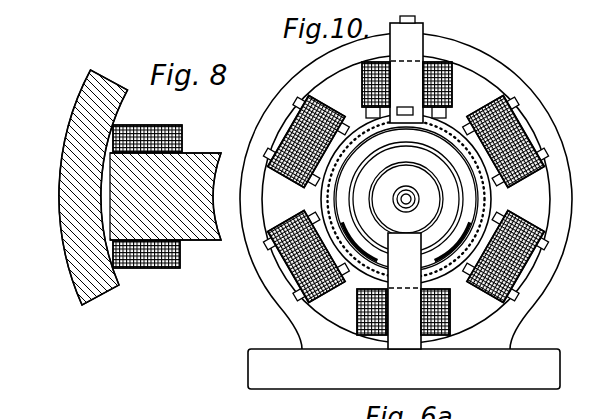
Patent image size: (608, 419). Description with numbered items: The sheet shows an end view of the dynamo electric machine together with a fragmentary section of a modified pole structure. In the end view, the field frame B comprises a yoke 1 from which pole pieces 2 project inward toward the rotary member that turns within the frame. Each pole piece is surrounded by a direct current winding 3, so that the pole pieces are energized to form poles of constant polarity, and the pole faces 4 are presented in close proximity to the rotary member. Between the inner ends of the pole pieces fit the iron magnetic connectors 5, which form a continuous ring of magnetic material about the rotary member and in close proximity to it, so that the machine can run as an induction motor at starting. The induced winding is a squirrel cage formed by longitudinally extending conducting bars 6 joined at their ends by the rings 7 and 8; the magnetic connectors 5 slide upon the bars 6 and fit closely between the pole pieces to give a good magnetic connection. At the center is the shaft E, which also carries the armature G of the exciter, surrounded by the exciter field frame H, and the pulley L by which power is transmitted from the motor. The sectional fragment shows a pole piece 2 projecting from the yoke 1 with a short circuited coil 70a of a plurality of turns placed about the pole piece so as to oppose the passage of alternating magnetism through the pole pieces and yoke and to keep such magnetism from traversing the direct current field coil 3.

In FIG. 8, the yoke 1 is at (72, 118).
In FIG. 10, the yoke 1 is at (542, 115).
In FIG. 8, the pole pieces 2 is at (132, 197).
In FIG. 10, the pole pieces 2 is at (540, 143).
In FIG. 8, the direct current windings 3 is at (166, 269).
In FIG. 10, the direct current windings 3 is at (519, 223).
In FIG. 10, the pole faces 4 is at (580, 206).
In FIG. 10, the magnetic connectors 5 is at (312, 200).
In FIG. 10, the conducting bars 6 is at (361, 114).
In FIG. 10, the ring 7 is at (505, 141).
In FIG. 10, the ring 8 is at (447, 120).
In FIG. 8, the short circuited coil 70a is at (183, 153).
In FIG. 10, the field frame B is at (404, 215).
In FIG. 10, the shaft E is at (401, 195).
In FIG. 10, the pulley L is at (404, 291).
In FIG. 10, the field frame of the exciter H is at (373, 257).
In FIG. 10, the armature G is at (436, 250).